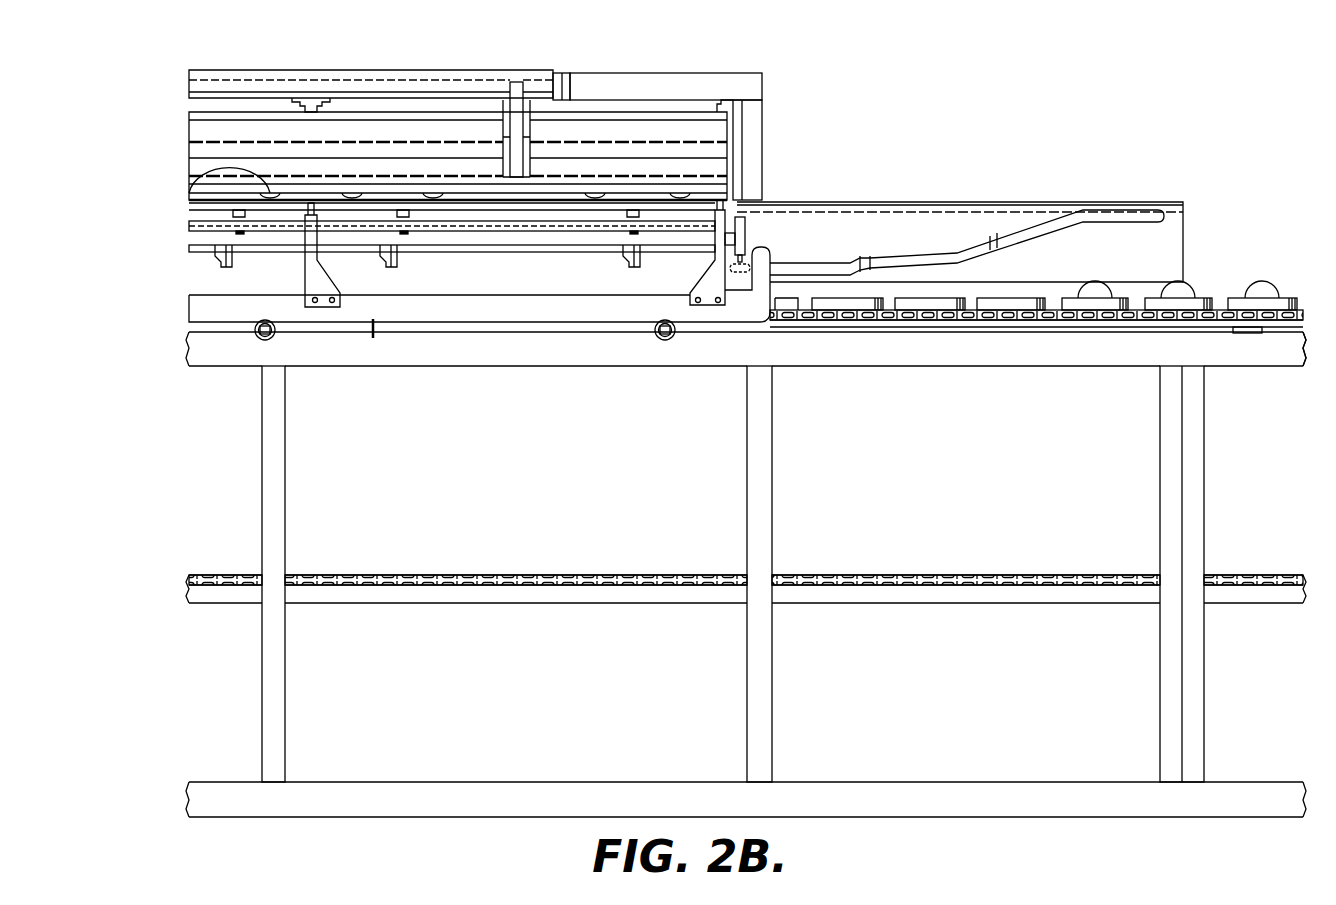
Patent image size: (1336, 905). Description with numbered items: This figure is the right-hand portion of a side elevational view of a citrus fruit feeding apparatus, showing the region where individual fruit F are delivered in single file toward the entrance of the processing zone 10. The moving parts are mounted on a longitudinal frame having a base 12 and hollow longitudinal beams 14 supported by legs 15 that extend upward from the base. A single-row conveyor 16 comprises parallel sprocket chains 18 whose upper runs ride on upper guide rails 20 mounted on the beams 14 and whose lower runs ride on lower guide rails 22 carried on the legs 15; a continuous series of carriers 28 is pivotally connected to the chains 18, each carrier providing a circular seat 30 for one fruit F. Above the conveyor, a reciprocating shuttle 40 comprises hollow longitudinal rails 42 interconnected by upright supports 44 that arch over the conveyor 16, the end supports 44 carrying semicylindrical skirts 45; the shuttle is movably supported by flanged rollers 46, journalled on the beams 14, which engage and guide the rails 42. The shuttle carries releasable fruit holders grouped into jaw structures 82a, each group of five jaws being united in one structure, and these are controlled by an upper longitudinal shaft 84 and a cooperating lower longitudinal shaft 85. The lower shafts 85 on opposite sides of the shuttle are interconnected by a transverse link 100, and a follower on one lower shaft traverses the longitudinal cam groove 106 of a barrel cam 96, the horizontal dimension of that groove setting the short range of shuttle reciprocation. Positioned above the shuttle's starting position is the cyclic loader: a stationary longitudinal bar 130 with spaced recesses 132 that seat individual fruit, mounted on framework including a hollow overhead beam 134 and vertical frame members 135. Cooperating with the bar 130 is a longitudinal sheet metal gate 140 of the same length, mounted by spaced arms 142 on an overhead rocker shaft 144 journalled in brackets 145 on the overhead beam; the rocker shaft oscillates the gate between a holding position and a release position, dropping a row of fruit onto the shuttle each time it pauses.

The entrance of the processing zone 10 is at (1296, 296).
The base 12 is at (204, 794).
The hollow longitudinal beams 14 is at (222, 358).
The legs 15 is at (276, 432).
The single-row conveyor 16 is at (1020, 325).
The sprocket chains 18 is at (882, 322).
The upper guide rails 20 is at (1120, 335).
The lower guide rails 22 is at (217, 600).
The carriers 28 is at (1075, 334).
The circular seat 30 is at (990, 300).
The shuttle 40 is at (375, 325).
The hollow longitudinal rails 42 is at (200, 300).
The upright supports 44 is at (312, 264).
The semicylindrical skirts 45 is at (757, 252).
The flanged rollers 46 is at (258, 342).
The jaw structure 82a is at (206, 256).
The upper longitudinal shaft 84 is at (190, 224).
The lower longitudinal shaft 85 is at (195, 247).
The barrel cam 96 is at (877, 226).
The transverse link 100 is at (747, 223).
The cam groove 106 is at (1117, 215).
The longitudinal bar 130 is at (637, 200).
The recesses 132 is at (192, 190).
The hollow overhead beam 134 is at (666, 78).
The vertical frame members 135 is at (751, 118).
The sheet metal gate 140 is at (193, 136).
The arms 142 is at (513, 84).
The rocker shaft 144 is at (268, 82).
The brackets 145 is at (563, 76).
The fruit F is at (1170, 288).